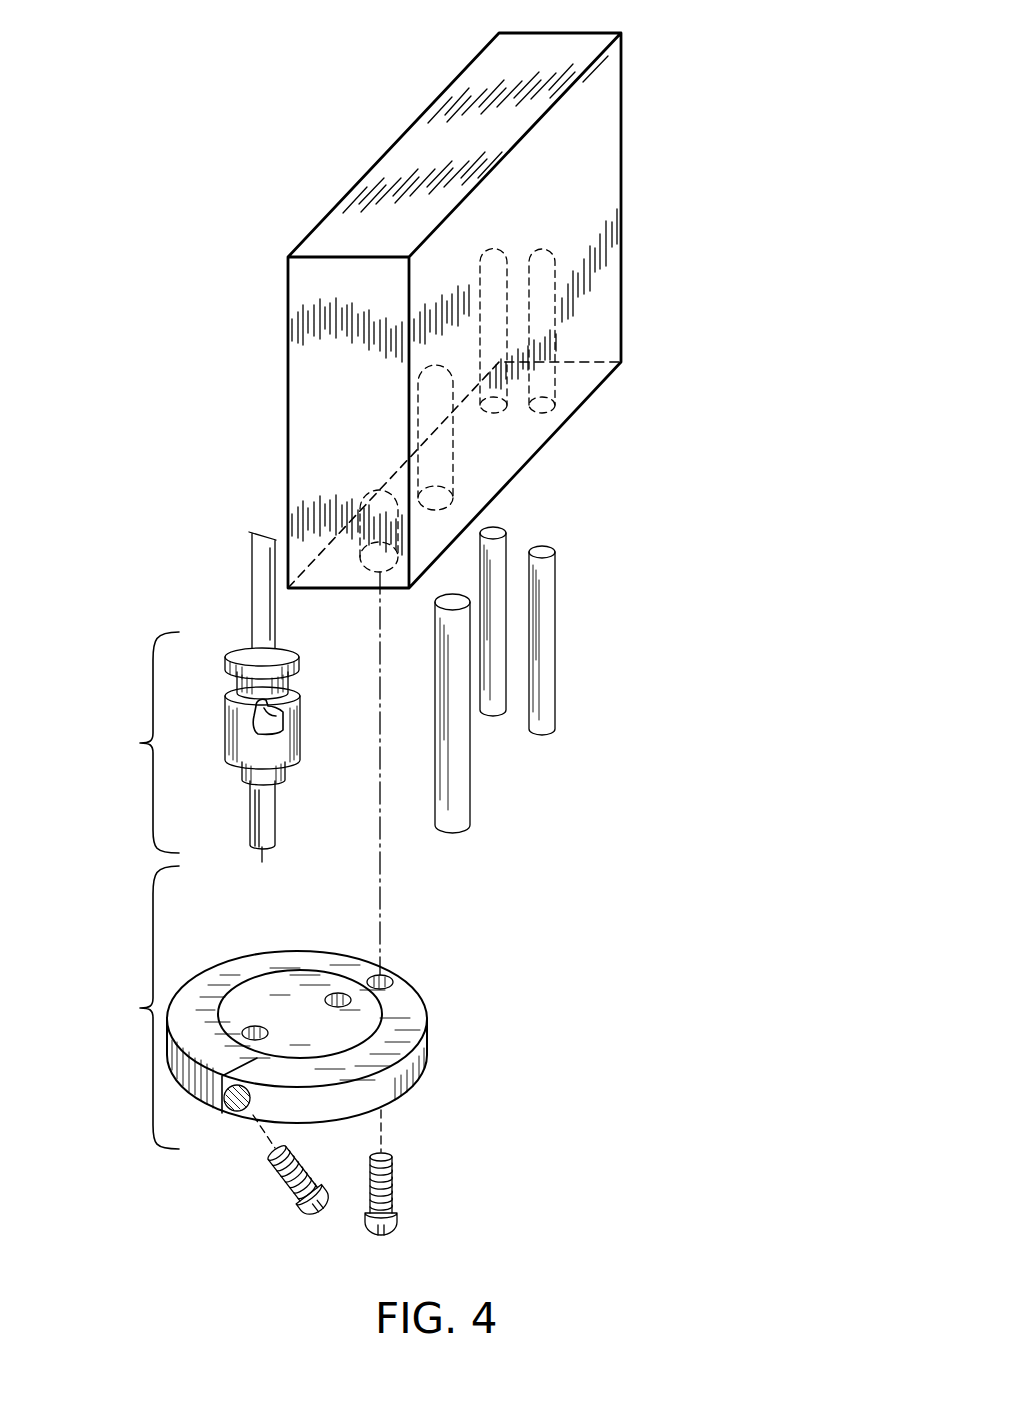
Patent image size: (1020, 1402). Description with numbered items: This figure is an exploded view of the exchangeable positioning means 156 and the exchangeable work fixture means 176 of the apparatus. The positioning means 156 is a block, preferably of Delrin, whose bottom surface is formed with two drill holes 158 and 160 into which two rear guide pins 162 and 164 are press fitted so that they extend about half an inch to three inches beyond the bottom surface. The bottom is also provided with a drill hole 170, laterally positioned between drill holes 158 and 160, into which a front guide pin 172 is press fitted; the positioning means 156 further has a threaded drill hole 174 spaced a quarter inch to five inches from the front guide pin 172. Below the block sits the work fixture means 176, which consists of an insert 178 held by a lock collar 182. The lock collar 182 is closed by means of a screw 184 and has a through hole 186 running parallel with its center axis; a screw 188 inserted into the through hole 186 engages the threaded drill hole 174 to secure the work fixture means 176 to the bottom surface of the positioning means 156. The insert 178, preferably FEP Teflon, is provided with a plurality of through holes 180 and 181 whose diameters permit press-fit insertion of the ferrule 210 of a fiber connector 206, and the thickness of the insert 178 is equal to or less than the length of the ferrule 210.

The exchangeable positioning means 156 is at (597, 122).
The drill hole 158 is at (548, 409).
The drill hole 160 is at (503, 412).
The rear guide pin 162 is at (558, 600).
The rear guide pin 164 is at (507, 552).
The drill hole 170 is at (450, 501).
The front guide pin 172 is at (470, 757).
The threaded drill hole 174 is at (366, 572).
The exchangeable work fixture means 176 is at (300, 1050).
The insert 178 is at (350, 1018).
The through hole 180 is at (268, 1033).
The through hole 181 is at (330, 1000).
The lock collar 182 is at (395, 1077).
The screw 184 is at (276, 1186).
The through hole 186 is at (393, 980).
The screw 188 is at (393, 1183).
The fiber connector 206 is at (193, 697).
The ferrule 210 is at (248, 816).